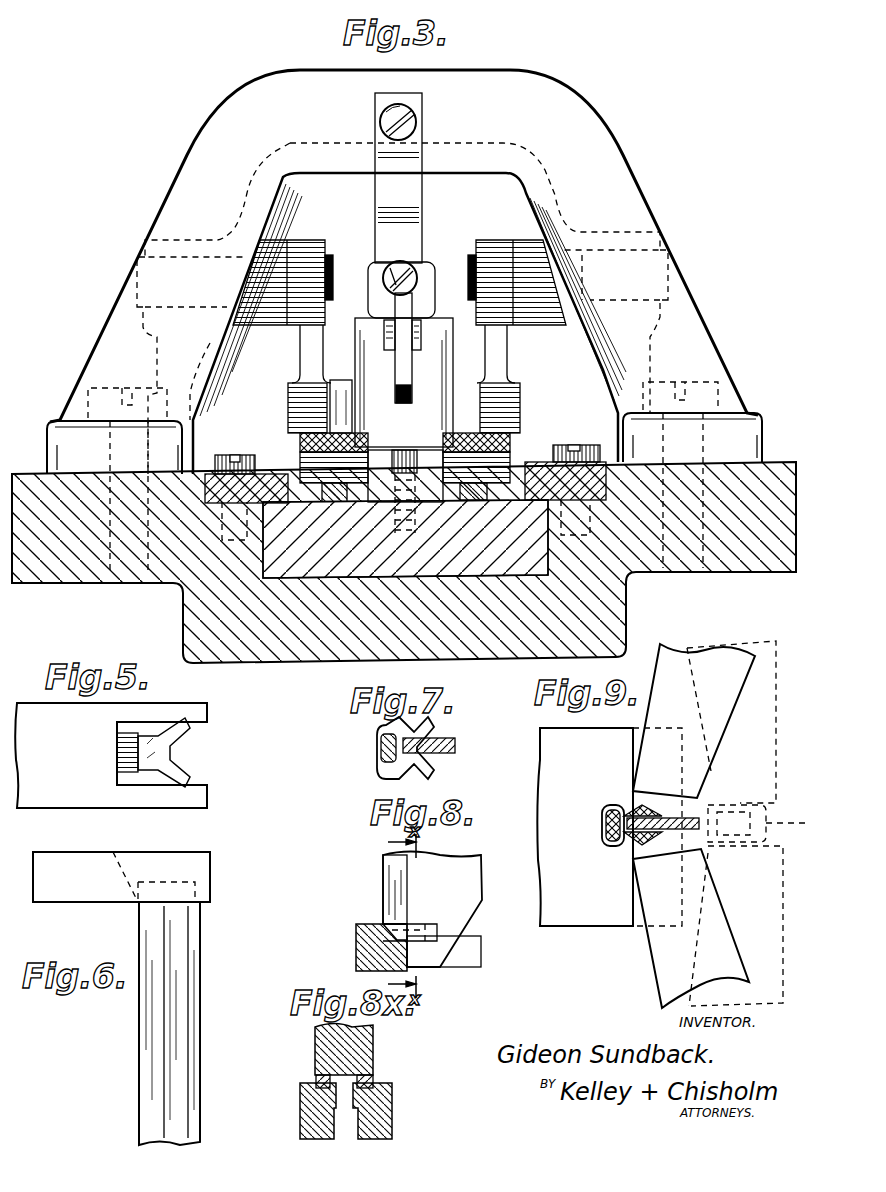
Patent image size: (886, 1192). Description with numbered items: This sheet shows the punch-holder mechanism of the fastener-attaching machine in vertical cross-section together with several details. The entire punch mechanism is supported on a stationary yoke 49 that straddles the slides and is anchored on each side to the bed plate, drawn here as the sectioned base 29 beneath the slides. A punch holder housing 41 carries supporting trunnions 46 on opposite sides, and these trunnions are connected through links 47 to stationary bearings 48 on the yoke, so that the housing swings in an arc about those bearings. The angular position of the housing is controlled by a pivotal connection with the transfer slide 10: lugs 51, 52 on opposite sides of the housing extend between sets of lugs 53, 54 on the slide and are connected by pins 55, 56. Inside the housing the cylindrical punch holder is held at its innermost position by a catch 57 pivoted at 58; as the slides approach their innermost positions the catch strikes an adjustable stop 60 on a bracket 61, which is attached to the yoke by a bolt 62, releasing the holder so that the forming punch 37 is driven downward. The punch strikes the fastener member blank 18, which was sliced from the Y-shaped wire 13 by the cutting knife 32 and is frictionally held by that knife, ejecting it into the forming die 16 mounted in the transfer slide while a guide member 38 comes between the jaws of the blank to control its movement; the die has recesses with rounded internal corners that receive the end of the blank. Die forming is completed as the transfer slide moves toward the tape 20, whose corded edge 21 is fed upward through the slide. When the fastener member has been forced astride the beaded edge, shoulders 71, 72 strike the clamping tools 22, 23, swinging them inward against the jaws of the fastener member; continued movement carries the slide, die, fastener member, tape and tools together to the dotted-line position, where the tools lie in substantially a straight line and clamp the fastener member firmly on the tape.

In FIG. 3, the transfer slide 10 is at (313, 565).
In FIG. 6, the wire 13 is at (156, 1069).
In FIG. 3, the forming die 16 is at (425, 483).
In FIG. 5, the forming die 16 is at (150, 761).
In FIG. 8, the forming die 16 is at (358, 958).
In FIG. 8X, the forming die 16 is at (385, 1128).
In FIG. 9, the forming die 16 is at (548, 778).
In FIG. 7, the fastener member blank 18 is at (402, 766).
In FIG. 8, the fastener member blank 18 is at (381, 932).
In FIG. 8X, the fastener member blank 18 is at (315, 1080).
In FIG. 9, the fastener member blank 18 is at (626, 836).
In FIG. 9, the tape 20 is at (703, 812).
In FIG. 9, the corded edge 21 is at (642, 805).
In FIG. 9, the clamping tool 22 is at (672, 660).
In FIG. 9, the clamping tool 23 is at (662, 980).
In FIG. 3, the base plate 29 is at (68, 570).
In FIG. 5, the cutting knife 32 is at (190, 857).
In FIG. 8, the forming punch 37 is at (388, 915).
In FIG. 7, the guide member 38 is at (455, 742).
In FIG. 8, the guide member 38 is at (460, 905).
In FIG. 8X, the guide member 38 is at (365, 1052).
In FIG. 3, the punch holder housing 41 is at (368, 362).
In FIG. 3, the trunnions 46 is at (300, 400).
In FIG. 3, the links 47 is at (305, 347).
In FIG. 3, the stationary bearings 48 is at (330, 262).
In FIG. 3, the yoke 49 is at (608, 182).
In FIG. 3, the lug 51 is at (300, 428).
In FIG. 3, the lug 52 is at (515, 430).
In FIG. 3, the lugs 53 is at (300, 442).
In FIG. 3, the lugs 54 is at (513, 455).
In FIG. 3, the pin 55 is at (288, 462).
In FIG. 3, the pin 56 is at (565, 448).
In FIG. 3, the catch 57 is at (400, 312).
In FIG. 7, the catch 57 is at (377, 750).
In FIG. 3, the pivot 58 is at (420, 335).
In FIG. 3, the adjustable stop 60 is at (390, 272).
In FIG. 3, the bracket 61 is at (387, 196).
In FIG. 3, the bolt 62 is at (418, 112).
In FIG. 9, the shoulder 71 is at (633, 890).
In FIG. 9, the shoulder 72 is at (628, 740).